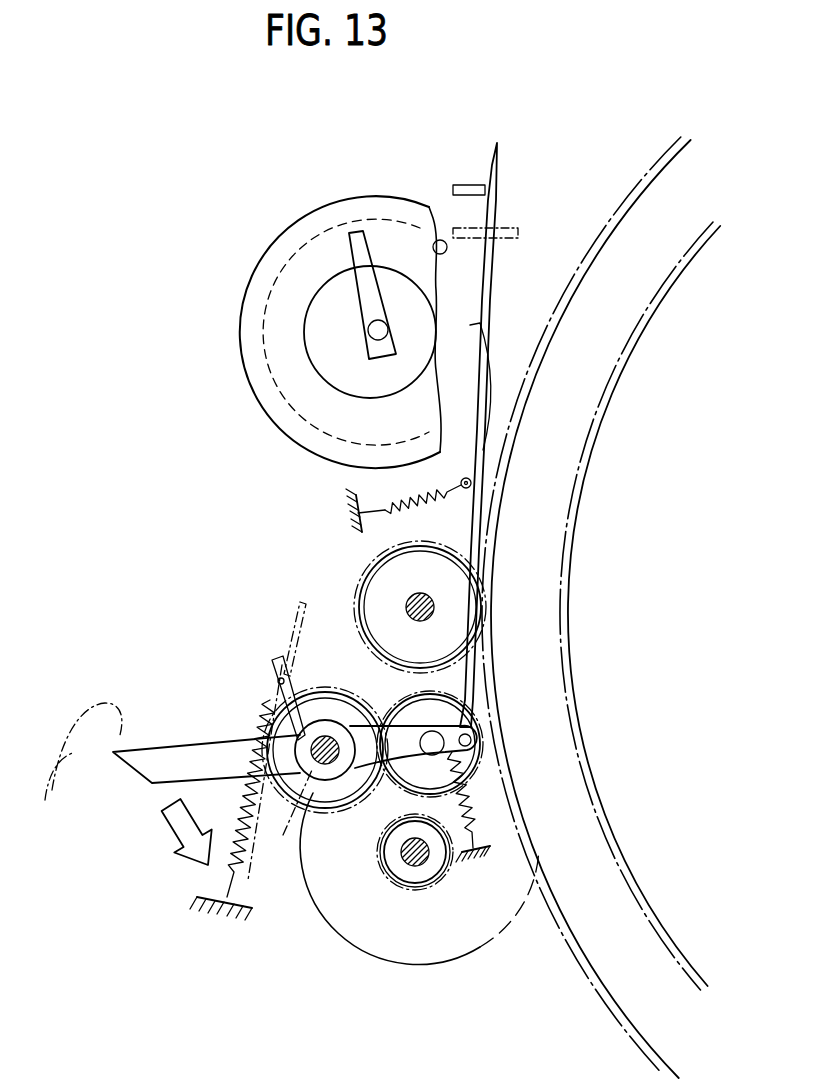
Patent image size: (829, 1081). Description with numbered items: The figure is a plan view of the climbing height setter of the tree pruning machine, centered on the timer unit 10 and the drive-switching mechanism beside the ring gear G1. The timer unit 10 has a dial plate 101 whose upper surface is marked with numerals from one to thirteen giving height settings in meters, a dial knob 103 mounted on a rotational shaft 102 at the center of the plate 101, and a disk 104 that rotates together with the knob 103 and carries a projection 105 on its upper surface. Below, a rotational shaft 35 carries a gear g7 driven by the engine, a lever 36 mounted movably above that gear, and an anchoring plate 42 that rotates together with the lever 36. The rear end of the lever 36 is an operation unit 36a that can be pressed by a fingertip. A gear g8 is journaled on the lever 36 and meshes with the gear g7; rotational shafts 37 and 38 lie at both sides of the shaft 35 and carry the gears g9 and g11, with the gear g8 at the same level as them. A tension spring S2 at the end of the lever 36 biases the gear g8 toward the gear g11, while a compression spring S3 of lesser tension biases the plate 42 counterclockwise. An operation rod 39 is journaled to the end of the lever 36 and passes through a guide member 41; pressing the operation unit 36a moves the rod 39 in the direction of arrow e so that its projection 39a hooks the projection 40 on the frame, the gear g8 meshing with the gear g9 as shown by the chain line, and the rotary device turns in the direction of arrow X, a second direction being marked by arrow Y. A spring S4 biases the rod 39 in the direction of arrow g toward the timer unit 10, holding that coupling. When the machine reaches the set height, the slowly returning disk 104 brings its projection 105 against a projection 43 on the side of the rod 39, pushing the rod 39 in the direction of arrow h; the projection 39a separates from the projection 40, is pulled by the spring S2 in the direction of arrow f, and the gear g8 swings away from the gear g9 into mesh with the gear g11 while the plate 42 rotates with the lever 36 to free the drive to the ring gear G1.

The ring gear G1 is at (658, 308).
The dial plate 101 is at (300, 447).
The disk 104 is at (280, 398).
The timer unit 10 is at (428, 341).
The dial knob 103 is at (355, 296).
The rotational shaft 102 is at (377, 340).
The projection 43 is at (477, 322).
The operation rod 39 is at (486, 434).
The projection 39a is at (483, 208).
The projection 40 is at (475, 187).
The guide member 41 is at (515, 238).
The projection 105 is at (447, 252).
The arrow H h is at (483, 333).
The arrow e is at (513, 160).
The arrow f is at (513, 200).
The arrow g is at (360, 503).
The spring S4 is at (432, 500).
The rotational shaft 37 is at (438, 604).
The gear g9 is at (362, 596).
The arrow X is at (617, 477).
The direction Y is at (602, 575).
The rotational shaft 35 is at (326, 765).
The gear g8 is at (482, 783).
The anchoring plate 42 is at (310, 778).
The tension spring S2 is at (440, 821).
The rotational shaft 38 is at (405, 866).
The gear g11 is at (430, 881).
The lever 36 is at (204, 748).
The operation unit 36a is at (167, 746).
The gear g7 is at (275, 712).
The compression spring S3 is at (248, 868).